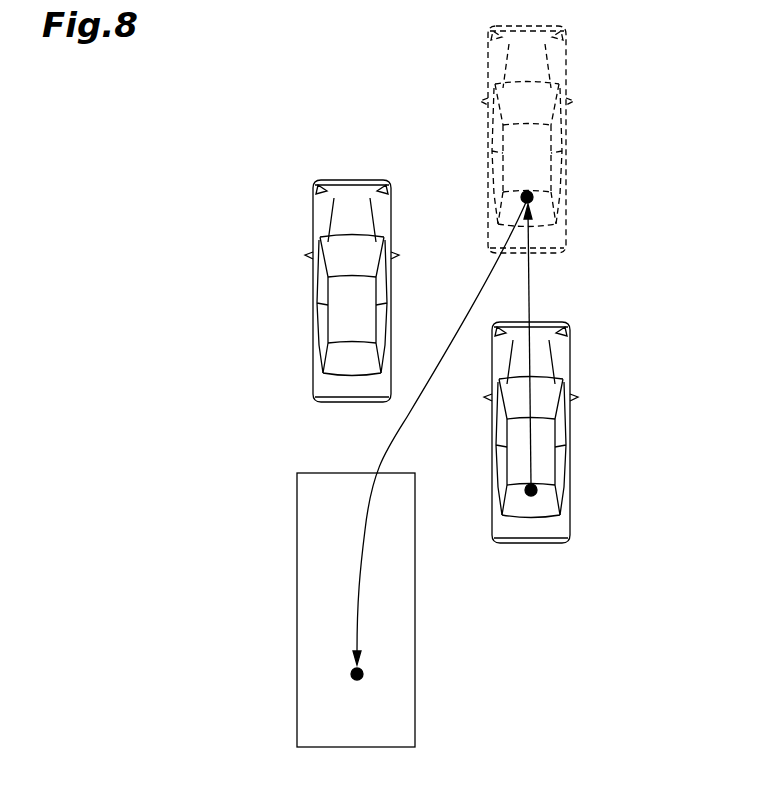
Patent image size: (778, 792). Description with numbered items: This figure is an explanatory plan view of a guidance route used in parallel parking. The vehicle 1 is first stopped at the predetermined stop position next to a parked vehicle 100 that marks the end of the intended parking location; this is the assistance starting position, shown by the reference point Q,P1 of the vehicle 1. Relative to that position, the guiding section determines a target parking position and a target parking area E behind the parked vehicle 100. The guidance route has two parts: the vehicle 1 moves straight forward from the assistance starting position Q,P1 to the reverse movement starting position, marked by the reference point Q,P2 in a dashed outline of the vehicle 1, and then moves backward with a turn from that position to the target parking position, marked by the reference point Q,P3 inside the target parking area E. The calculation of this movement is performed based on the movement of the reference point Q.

The vehicle 1 is at (565, 62).
The parked vehicle 100 is at (311, 290).
The target parking area E is at (297, 592).
The reference point at assistance starting position Q,P1 is at (532, 497).
The reference point at reverse movement starting position Q,P2 is at (530, 190).
The reference point at target parking position Q,P3 is at (359, 680).